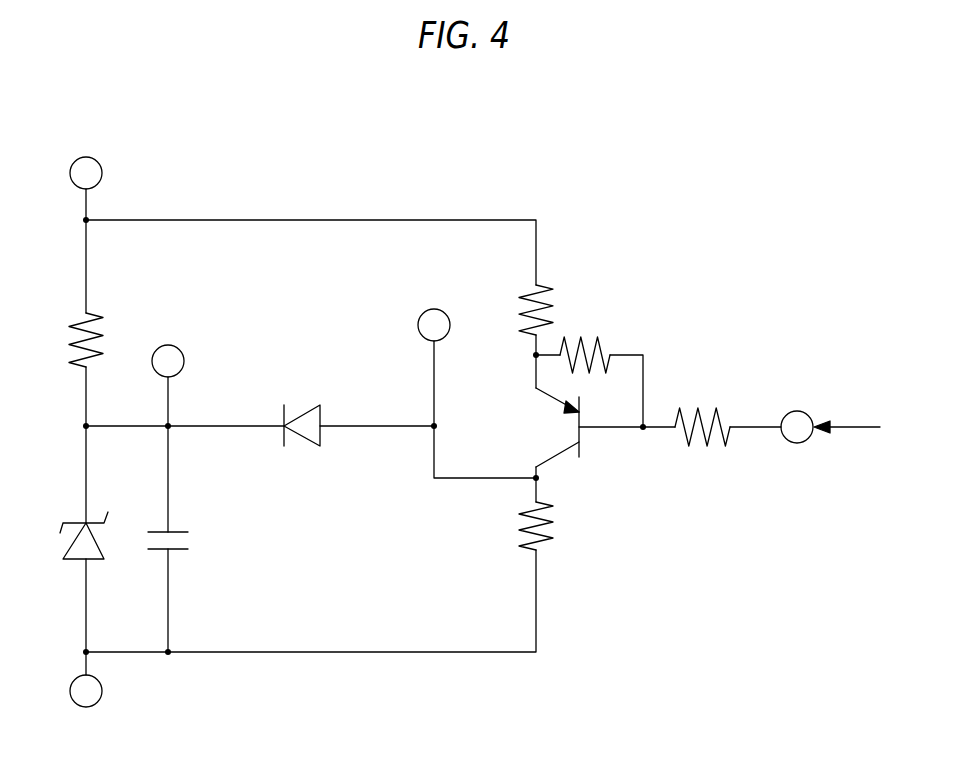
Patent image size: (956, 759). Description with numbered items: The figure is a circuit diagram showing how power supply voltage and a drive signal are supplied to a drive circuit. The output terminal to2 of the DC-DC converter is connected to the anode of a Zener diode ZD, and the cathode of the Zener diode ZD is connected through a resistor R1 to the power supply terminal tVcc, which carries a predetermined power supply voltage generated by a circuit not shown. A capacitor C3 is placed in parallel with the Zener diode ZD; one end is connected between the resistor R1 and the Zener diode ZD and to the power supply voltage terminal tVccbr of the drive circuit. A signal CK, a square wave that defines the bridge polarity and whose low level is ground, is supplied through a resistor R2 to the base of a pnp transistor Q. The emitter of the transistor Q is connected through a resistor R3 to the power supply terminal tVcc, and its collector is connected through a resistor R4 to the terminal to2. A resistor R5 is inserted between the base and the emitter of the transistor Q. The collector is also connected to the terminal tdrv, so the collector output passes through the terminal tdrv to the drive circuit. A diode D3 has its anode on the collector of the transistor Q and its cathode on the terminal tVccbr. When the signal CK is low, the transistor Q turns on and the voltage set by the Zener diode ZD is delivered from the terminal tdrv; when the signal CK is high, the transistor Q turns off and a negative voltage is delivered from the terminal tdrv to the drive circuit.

The power supply terminal tVcc is at (86, 160).
The resistor R1 is at (70, 340).
The Zener diode ZD is at (74, 551).
The output terminal to2 is at (86, 706).
The power supply voltage terminal tVccbr is at (168, 347).
The capacitor C3 is at (176, 557).
The diode D3 is at (302, 442).
The terminal tdrv is at (435, 310).
The resistor R3 is at (520, 310).
The resistor R5 is at (585, 340).
The pnp transistor Q is at (552, 427).
The resistor R4 is at (519, 526).
The resistor R2 is at (702, 414).
The signal CK is at (830, 416).